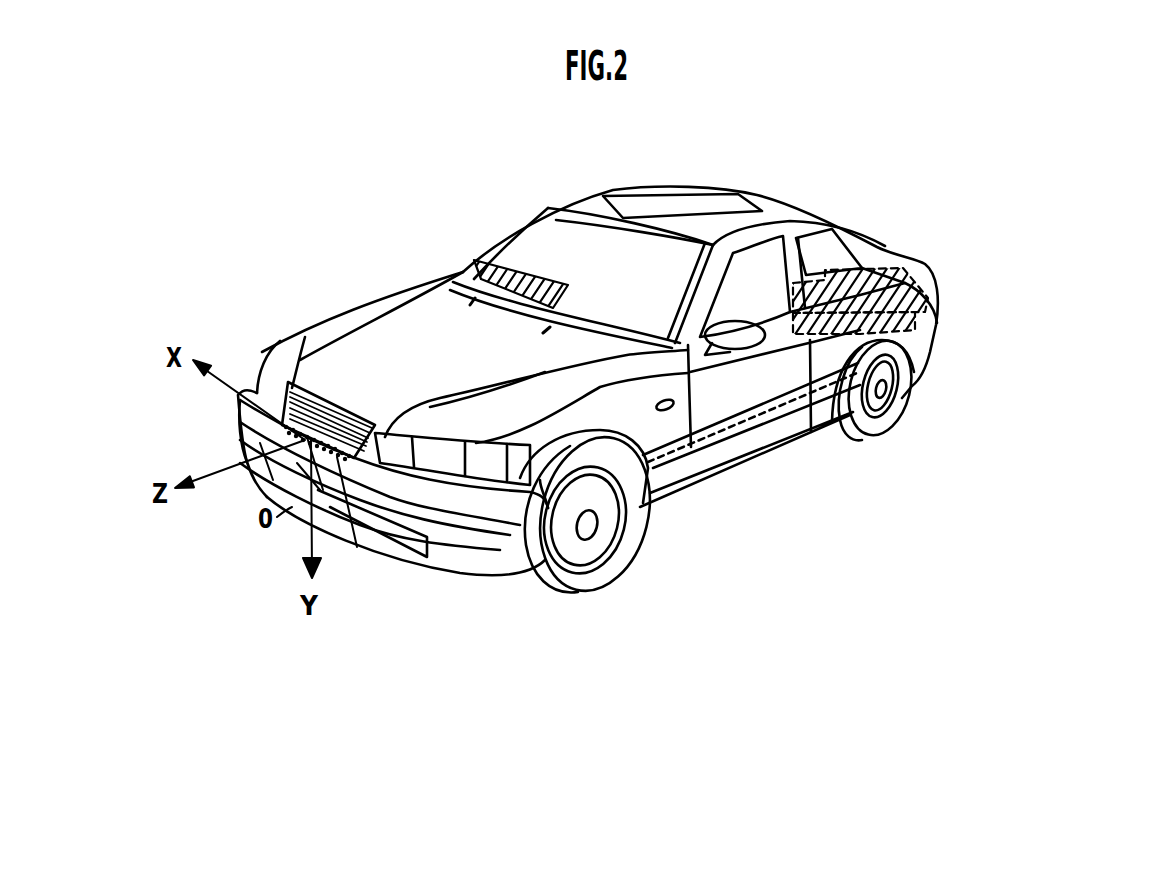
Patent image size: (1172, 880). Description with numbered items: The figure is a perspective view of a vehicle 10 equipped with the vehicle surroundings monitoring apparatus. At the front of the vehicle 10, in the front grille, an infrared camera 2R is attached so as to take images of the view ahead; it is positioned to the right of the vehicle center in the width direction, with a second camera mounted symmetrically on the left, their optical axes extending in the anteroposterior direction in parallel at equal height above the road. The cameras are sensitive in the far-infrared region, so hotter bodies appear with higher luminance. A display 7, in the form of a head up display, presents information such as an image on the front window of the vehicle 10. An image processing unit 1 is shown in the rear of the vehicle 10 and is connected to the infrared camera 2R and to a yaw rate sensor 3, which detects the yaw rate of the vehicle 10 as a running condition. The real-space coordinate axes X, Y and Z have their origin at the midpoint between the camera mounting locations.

The vehicle 10 is at (688, 186).
The display 7 is at (478, 262).
The infrared camera 2R is at (312, 375).
The yaw rate sensor 3 is at (903, 268).
The image processing unit 1 is at (927, 333).